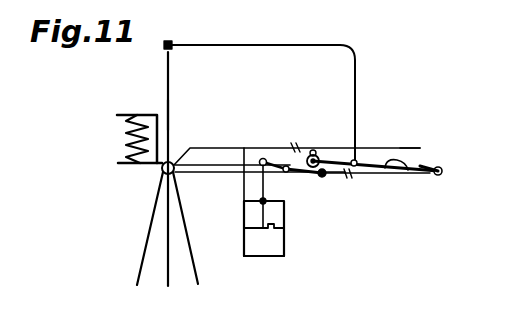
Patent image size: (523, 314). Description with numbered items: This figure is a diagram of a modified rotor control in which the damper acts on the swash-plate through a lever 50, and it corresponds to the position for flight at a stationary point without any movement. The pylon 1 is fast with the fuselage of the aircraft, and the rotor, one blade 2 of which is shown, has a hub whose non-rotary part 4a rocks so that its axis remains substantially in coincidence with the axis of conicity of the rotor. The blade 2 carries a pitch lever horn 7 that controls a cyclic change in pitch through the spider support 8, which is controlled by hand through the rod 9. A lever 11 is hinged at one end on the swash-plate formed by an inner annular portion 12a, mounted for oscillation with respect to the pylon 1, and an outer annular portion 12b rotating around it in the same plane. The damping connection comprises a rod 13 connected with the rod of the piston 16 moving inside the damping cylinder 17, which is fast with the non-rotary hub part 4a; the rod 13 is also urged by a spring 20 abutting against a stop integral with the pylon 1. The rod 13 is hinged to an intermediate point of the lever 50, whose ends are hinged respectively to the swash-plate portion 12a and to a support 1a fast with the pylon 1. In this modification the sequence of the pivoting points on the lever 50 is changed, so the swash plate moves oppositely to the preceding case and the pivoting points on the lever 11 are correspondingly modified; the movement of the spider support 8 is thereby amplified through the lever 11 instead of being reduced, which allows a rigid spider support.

The pylon 1 is at (138, 268).
The support 1a is at (214, 163).
The blade 2 is at (414, 147).
The non-rotary part of the hub 4a is at (241, 148).
The pitch lever horn 7 is at (320, 146).
The spider support 8 is at (268, 46).
The rod 9 is at (170, 106).
The lever 11 is at (399, 173).
The inner annular portion of the swash-plate 12a is at (335, 177).
The outer annular portion of the swash-plate 12b is at (407, 173).
The rod 13 is at (298, 176).
The piston 16 is at (252, 230).
The damping cylinder 17 is at (263, 258).
The spring 20 is at (128, 137).
The lever 50 is at (308, 182).